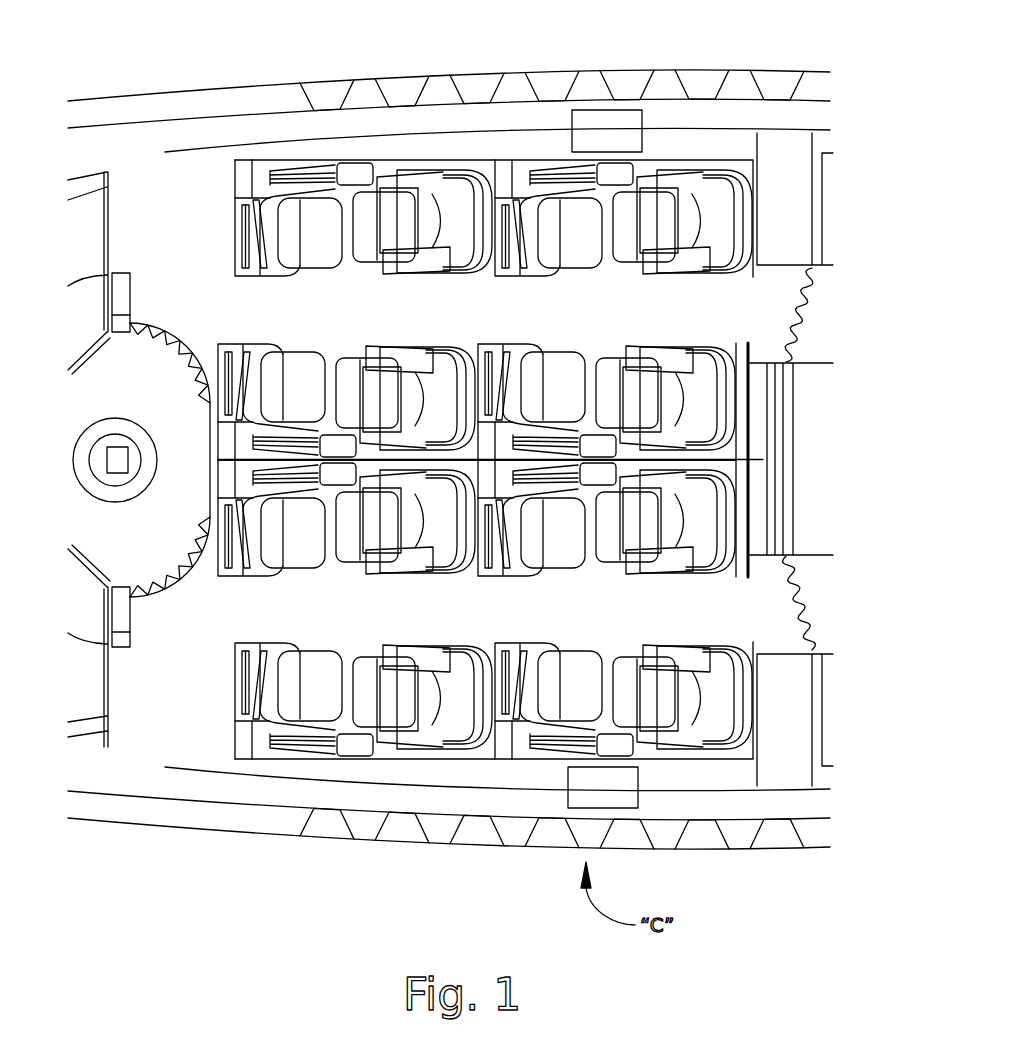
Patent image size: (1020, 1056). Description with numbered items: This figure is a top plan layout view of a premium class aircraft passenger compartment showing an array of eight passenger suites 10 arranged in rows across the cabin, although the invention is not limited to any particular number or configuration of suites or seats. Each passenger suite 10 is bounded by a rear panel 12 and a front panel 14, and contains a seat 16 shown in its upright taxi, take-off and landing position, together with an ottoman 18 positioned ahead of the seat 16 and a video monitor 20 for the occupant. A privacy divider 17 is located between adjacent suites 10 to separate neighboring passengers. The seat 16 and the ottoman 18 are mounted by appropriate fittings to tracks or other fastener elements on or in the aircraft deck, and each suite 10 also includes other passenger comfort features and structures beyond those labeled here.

The passenger suite 10 is at (398, 105).
The rear panel 12 is at (755, 198).
The front panel 14 is at (233, 242).
The seat 16 is at (414, 373).
The privacy divider 17 is at (250, 477).
The ottoman 18 is at (299, 364).
The video monitor 20 is at (258, 237).